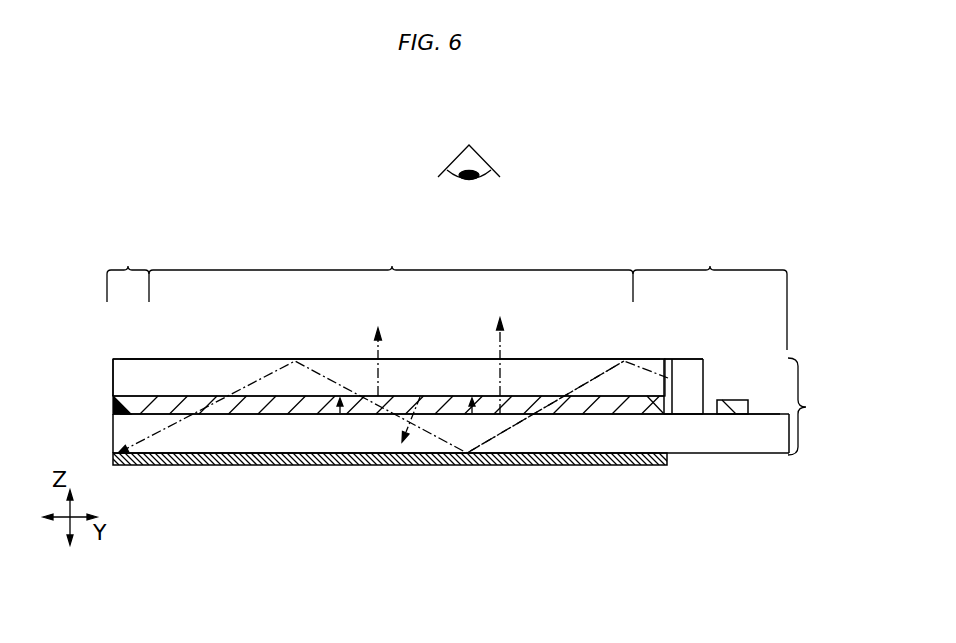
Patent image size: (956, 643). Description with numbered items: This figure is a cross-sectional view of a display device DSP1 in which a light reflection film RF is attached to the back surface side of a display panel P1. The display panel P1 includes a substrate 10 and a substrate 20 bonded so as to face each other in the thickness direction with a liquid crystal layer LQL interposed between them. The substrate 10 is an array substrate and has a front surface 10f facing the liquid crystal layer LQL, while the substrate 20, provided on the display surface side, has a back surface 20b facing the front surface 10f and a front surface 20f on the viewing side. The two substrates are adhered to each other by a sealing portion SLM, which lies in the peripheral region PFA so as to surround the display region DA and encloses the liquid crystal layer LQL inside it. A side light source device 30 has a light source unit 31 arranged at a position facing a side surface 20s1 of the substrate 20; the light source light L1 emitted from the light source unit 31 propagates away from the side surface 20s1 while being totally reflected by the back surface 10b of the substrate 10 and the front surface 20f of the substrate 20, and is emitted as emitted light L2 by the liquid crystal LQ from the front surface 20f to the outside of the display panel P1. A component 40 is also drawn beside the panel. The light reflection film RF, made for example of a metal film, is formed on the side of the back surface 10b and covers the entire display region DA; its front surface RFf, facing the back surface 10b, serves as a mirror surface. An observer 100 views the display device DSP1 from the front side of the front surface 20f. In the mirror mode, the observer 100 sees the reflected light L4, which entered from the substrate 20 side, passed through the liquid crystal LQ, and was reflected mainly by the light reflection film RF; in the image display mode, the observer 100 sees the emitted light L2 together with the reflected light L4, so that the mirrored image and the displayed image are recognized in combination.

The observer 100 is at (512, 150).
The display device DSP1 is at (258, 244).
The peripheral region PFA is at (446, 295).
The display region DA is at (391, 271).
The substrate 20 is at (128, 377).
The front surface 20f is at (306, 348).
The back surface 20b is at (452, 396).
The side surface 20s1 is at (666, 355).
The sealing portion SLM is at (128, 405).
The substrate 10 is at (130, 438).
The front surface 10f is at (355, 413).
The back surface 10b is at (315, 455).
The light reflection film RF is at (525, 466).
The front surface RFf is at (420, 413).
The light source unit 31 is at (666, 429).
The side light source device 30 is at (686, 398).
The component 40 is at (731, 408).
The display panel P1 is at (812, 406).
The liquid crystal layer LQL is at (393, 429).
The liquid crystal LQ is at (248, 405).
The light source light L1 is at (580, 372).
The emitted light L2 is at (378, 366).
The reflected light L4 is at (500, 352).